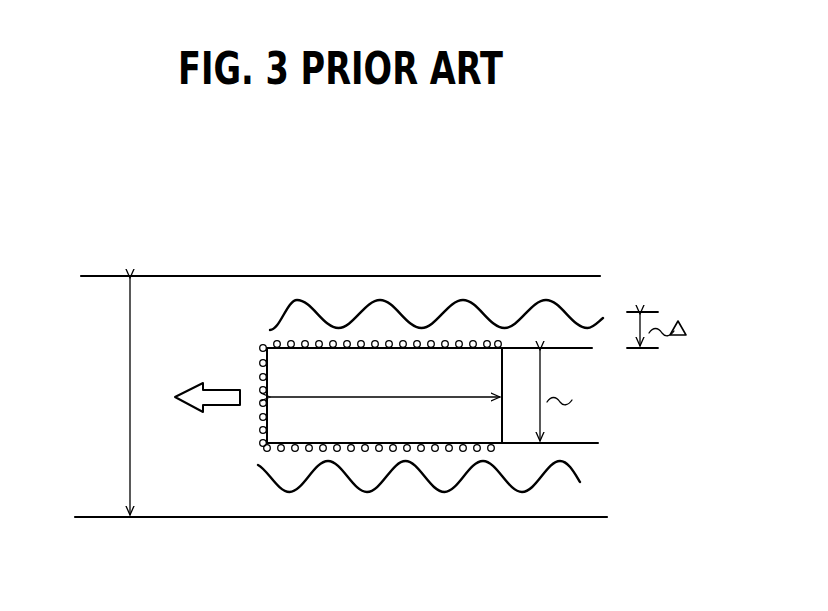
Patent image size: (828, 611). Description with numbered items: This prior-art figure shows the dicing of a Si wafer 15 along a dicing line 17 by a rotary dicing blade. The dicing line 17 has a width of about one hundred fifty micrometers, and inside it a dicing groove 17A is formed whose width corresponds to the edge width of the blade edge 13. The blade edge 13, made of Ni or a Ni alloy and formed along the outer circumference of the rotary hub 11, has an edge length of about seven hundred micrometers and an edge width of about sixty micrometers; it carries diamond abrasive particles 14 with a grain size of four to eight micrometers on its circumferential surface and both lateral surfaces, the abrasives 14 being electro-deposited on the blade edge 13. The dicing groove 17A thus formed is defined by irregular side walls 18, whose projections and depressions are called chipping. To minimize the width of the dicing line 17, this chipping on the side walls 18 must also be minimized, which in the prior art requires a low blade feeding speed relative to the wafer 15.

The rotary hub 11 is at (522, 435).
The blade edge 13 is at (462, 432).
The diamond abrasive particles 14 is at (300, 452).
The Si wafer 15 is at (150, 255).
The dicing line 17 is at (185, 347).
The dicing groove 17A is at (572, 453).
The irregular side walls 18 is at (398, 308).